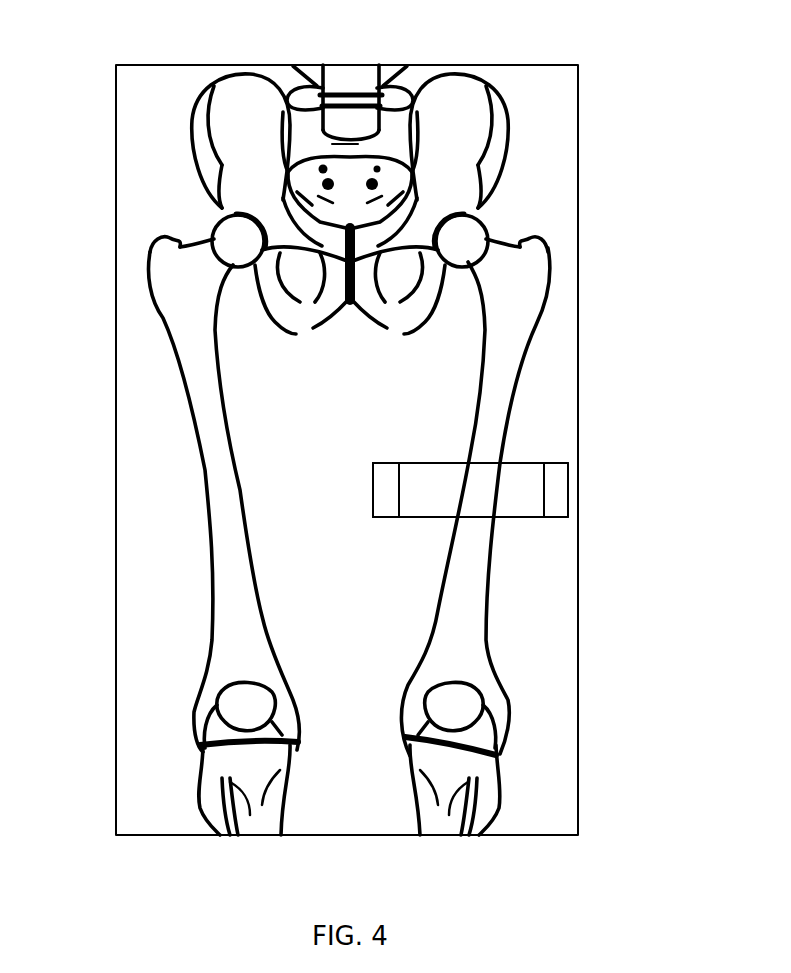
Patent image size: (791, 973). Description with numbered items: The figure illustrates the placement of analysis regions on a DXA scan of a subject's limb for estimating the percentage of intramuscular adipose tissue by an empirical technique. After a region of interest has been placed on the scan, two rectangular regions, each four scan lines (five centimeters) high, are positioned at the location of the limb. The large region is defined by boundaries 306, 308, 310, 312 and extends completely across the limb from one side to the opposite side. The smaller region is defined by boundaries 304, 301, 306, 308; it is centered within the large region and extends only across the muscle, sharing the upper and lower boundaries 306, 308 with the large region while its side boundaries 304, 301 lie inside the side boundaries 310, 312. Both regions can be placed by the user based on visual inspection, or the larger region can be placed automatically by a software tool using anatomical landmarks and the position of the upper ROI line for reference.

The boundary 301 is at (544, 475).
The boundary 304 is at (397, 503).
The boundary 306 is at (483, 462).
The boundary 308 is at (528, 518).
The boundary 310 is at (373, 498).
The boundary 312 is at (568, 505).